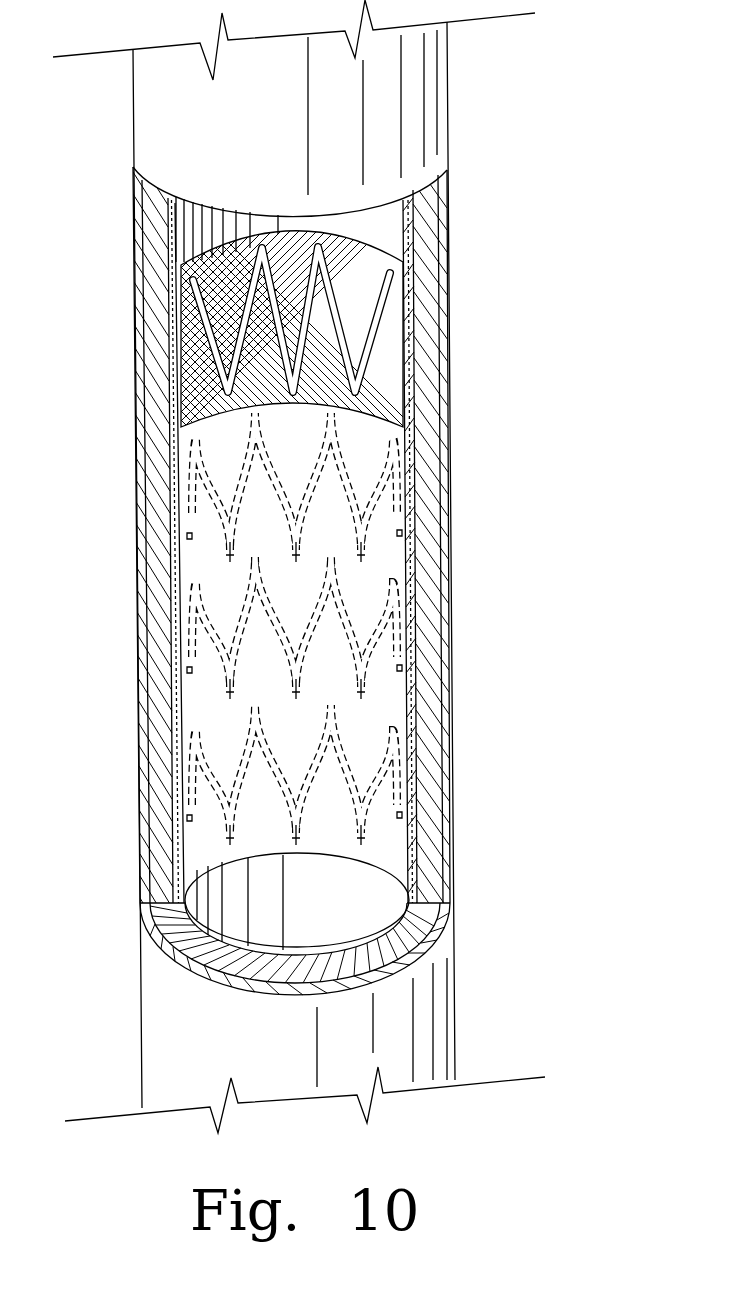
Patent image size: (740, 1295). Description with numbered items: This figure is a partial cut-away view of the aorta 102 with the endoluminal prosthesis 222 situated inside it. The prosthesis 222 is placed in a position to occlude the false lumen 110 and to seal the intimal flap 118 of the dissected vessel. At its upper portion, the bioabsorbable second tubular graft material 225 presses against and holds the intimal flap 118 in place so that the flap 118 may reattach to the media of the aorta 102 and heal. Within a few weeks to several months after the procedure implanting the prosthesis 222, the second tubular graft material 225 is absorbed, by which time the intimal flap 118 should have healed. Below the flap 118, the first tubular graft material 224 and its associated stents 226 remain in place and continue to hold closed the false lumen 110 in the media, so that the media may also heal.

The aorta 102 is at (468, 96).
The false lumen 110 is at (112, 531).
The intimal flap 118 is at (137, 308).
The prosthesis 222 is at (475, 657).
The first tubular graft material 224 is at (372, 572).
The second tubular graft material 225 is at (447, 262).
The stents 226 is at (440, 480).